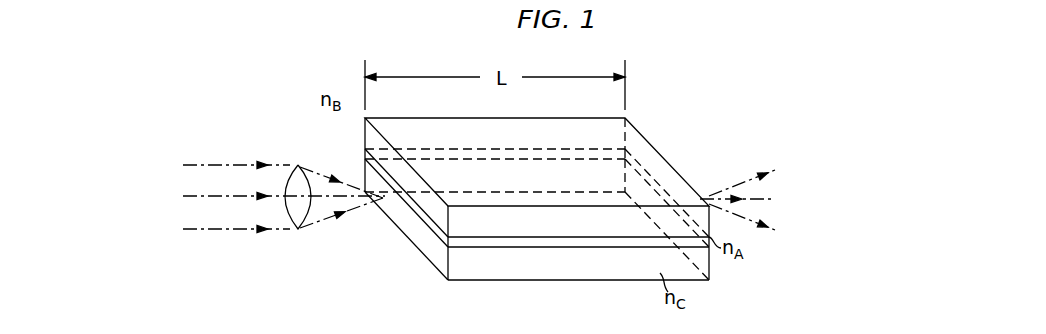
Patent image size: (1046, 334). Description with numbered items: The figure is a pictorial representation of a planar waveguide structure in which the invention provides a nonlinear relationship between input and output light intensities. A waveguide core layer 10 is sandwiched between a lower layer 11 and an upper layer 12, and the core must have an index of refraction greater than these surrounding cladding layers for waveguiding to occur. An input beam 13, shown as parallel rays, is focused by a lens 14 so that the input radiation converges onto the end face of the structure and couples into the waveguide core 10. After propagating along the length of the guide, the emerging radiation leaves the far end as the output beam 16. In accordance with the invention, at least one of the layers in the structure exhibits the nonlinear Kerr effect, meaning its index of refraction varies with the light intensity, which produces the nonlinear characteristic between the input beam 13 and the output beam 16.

The waveguide core layer 10 is at (423, 217).
The layer 11 is at (495, 268).
The layer 12 is at (370, 133).
The input beam 13 is at (203, 222).
The lens 14 is at (300, 186).
The output beam 16 is at (733, 191).